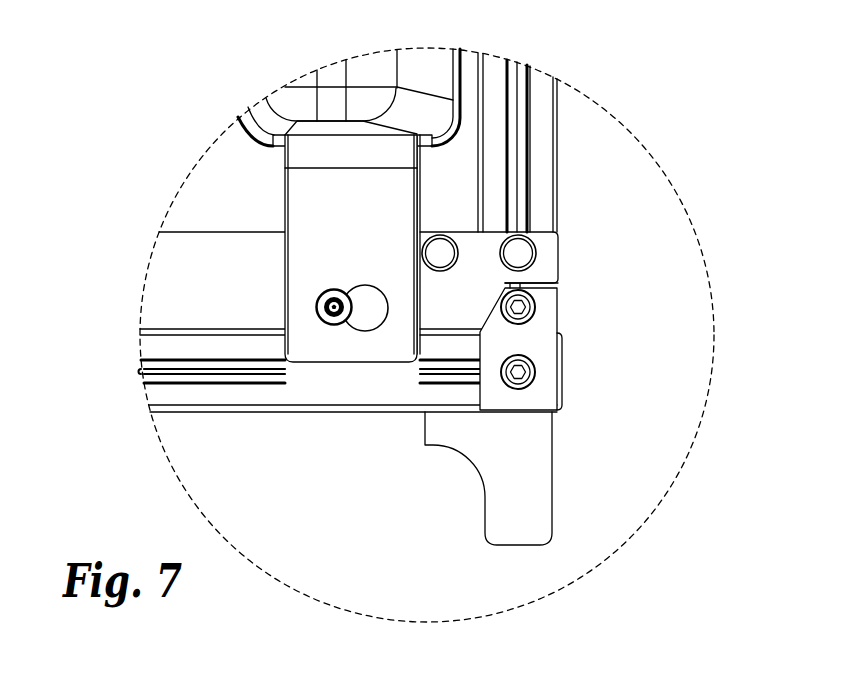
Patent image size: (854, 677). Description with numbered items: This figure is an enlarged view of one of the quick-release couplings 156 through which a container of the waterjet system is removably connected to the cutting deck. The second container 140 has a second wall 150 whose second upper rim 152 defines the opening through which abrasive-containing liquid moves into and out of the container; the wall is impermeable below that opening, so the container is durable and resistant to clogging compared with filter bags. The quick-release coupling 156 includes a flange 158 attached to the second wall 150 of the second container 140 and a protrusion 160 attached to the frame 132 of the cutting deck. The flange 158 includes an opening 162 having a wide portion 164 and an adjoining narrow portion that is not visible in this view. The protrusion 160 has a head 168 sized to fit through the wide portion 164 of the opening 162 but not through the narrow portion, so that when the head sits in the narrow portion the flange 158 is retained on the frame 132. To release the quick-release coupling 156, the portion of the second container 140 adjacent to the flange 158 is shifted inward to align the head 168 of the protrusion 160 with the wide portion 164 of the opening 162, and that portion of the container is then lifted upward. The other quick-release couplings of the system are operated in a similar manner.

The frame 132 is at (228, 401).
The second container 140 is at (438, 159).
The second wall 150 is at (258, 130).
The second upper rim 152 is at (439, 97).
The quick-release coupling 156 is at (258, 252).
The flange 158 is at (369, 201).
The protrusion 160 is at (303, 373).
The opening 162 is at (363, 345).
The wide portion 164 is at (354, 288).
The head 168 is at (333, 313).